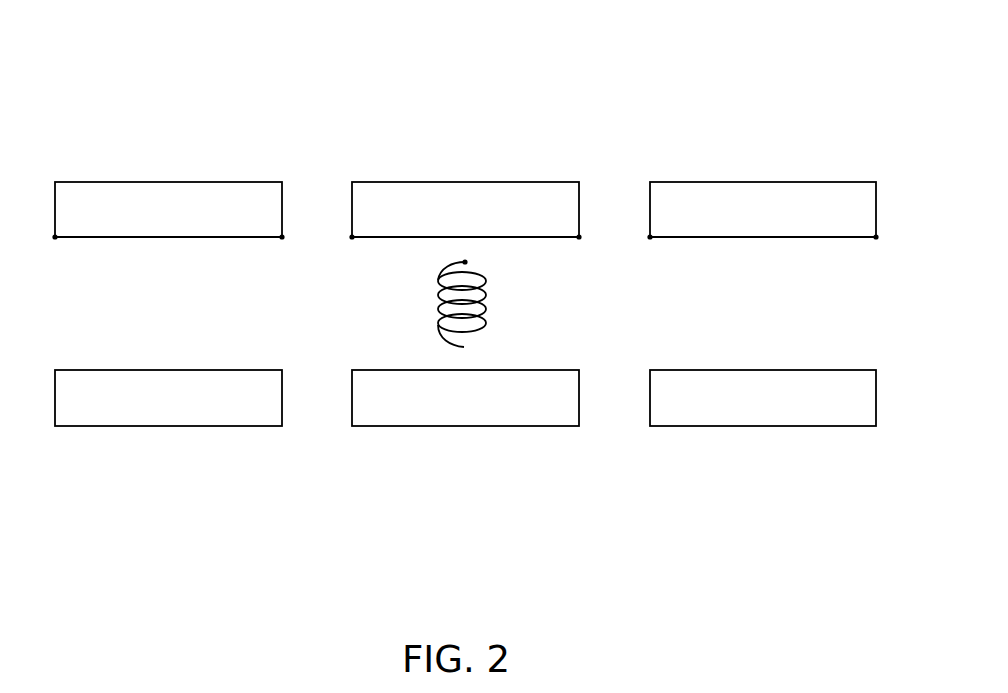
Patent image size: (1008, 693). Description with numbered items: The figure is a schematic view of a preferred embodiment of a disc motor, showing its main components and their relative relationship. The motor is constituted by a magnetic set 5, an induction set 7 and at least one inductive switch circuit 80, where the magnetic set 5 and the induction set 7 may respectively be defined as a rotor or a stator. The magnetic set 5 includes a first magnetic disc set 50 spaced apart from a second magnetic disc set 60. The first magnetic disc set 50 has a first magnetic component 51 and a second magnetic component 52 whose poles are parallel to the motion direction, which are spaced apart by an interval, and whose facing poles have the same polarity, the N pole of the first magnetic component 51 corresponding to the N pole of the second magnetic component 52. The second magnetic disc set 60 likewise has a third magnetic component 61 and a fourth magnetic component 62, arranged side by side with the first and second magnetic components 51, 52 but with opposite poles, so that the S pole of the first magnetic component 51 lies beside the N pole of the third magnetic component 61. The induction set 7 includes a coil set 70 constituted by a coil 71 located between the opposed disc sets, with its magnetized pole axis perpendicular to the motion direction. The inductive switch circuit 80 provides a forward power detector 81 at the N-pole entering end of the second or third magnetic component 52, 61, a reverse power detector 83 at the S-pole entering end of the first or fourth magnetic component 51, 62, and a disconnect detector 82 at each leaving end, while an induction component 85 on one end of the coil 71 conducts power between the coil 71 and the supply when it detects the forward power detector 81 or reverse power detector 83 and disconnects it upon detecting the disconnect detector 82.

The magnetic set 5 is at (826, 118).
The induction set 7 is at (790, 300).
The first magnetic disc set 50 is at (118, 152).
The first magnetic component 51 is at (167, 191).
The second magnetic component 52 is at (468, 198).
The second magnetic disc set 60 is at (120, 475).
The third magnetic component 61 is at (192, 417).
The fourth magnetic component 62 is at (452, 418).
The coil set 70 is at (117, 313).
The coil 71 is at (490, 300).
The inductive switch circuit 80 is at (352, 253).
The forward power detector 81 is at (350, 238).
The disconnect detector 82 is at (282, 240).
The reverse power detector 83 is at (55, 238).
The induction component 85 is at (468, 262).